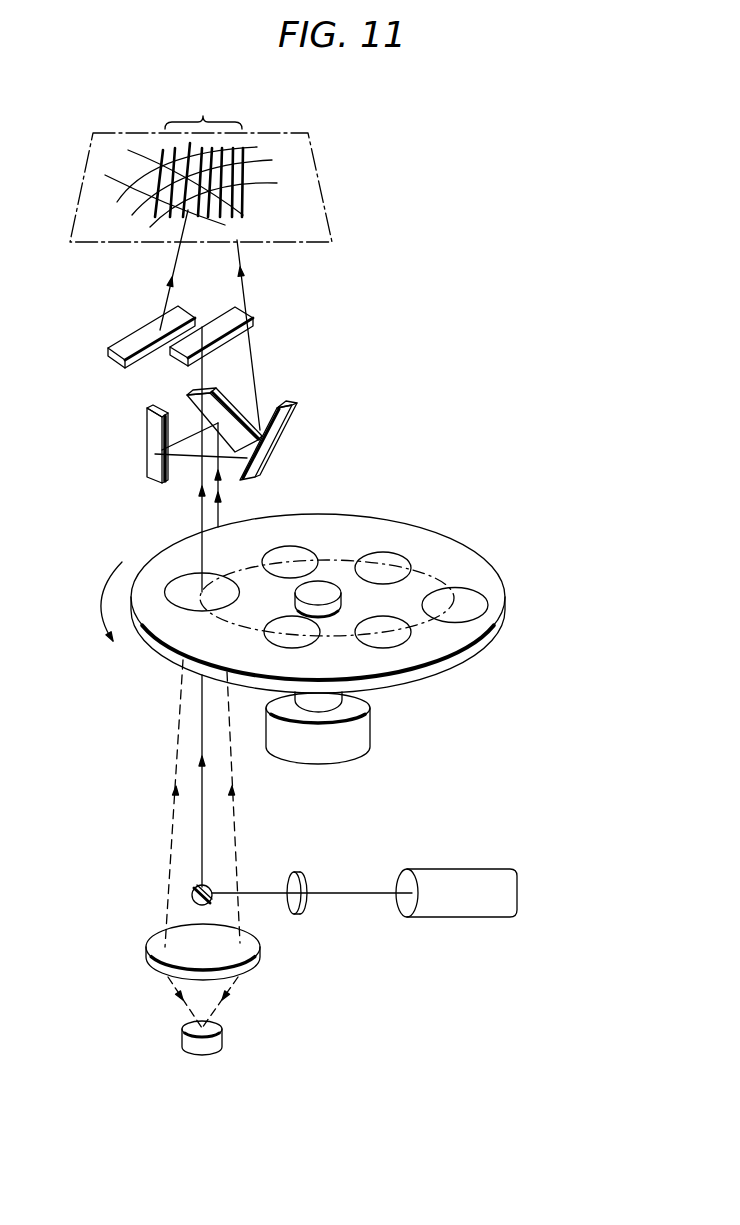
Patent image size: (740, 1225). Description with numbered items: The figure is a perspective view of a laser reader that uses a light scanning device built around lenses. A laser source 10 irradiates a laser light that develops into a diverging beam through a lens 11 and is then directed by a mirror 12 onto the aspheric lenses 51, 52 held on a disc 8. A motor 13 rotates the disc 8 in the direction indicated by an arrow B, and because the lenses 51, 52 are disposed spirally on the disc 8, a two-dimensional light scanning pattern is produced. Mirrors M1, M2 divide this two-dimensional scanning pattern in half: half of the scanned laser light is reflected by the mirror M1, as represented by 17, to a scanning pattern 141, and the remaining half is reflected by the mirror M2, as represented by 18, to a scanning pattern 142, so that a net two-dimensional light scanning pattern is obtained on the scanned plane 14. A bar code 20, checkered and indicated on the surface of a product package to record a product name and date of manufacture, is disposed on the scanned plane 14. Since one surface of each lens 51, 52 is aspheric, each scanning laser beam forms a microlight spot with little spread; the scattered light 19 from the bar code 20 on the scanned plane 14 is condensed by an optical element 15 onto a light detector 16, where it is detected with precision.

The scanned plane 14 is at (332, 232).
The scanning pattern 141 is at (258, 148).
The scanning pattern 142 is at (272, 208).
The bar code 20 is at (203, 108).
The mirror M1 is at (170, 320).
The mirror M2 is at (214, 425).
The laser light reflected by mirror M1 17 is at (200, 508).
The laser light reflected by mirror M2 18 is at (221, 516).
The disc 8 is at (460, 660).
The aspheric lens 51 is at (187, 580).
The aspheric lens 52 is at (293, 547).
The direction of rotation B is at (95, 601).
The motor 13 is at (360, 737).
The scattered light 19 is at (238, 837).
The mirror 12 is at (190, 898).
The lens 11 is at (302, 880).
The laser source 10 is at (452, 867).
The optical element 15 is at (257, 960).
The light detector 16 is at (218, 1040).